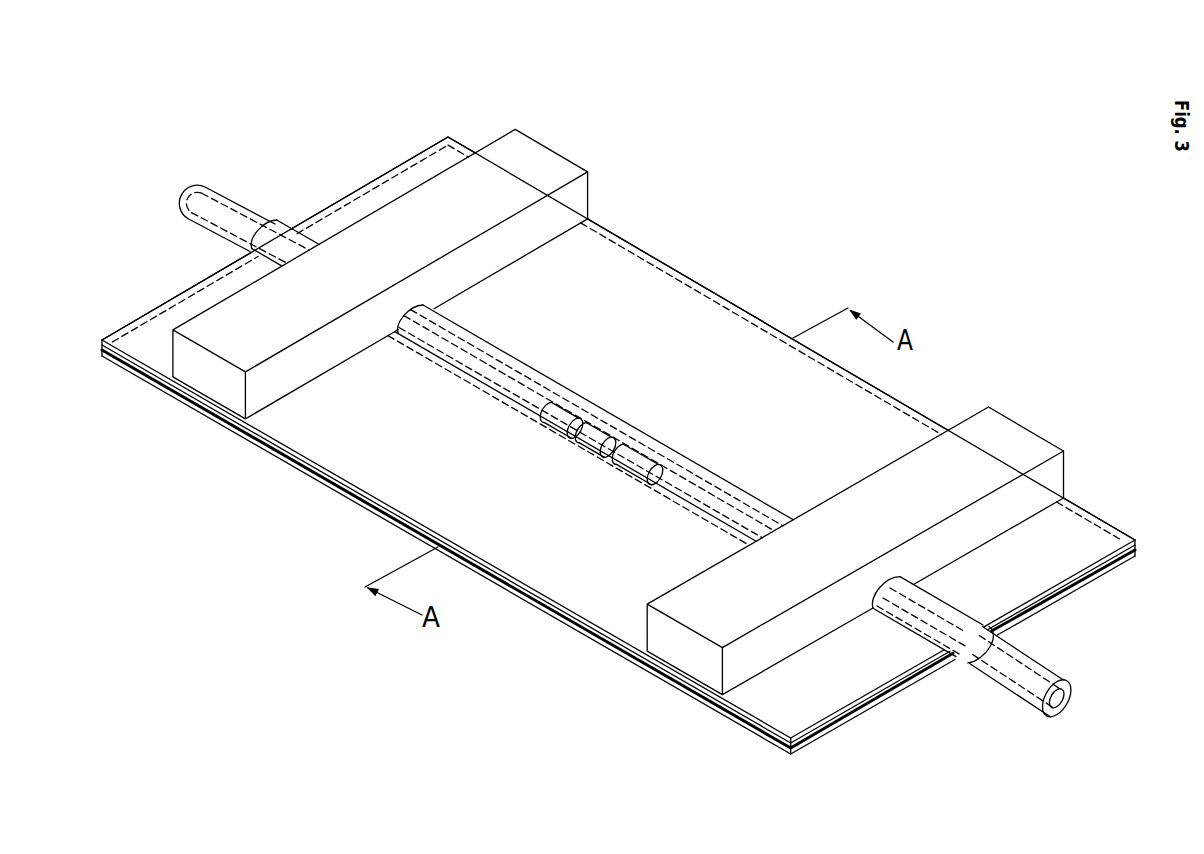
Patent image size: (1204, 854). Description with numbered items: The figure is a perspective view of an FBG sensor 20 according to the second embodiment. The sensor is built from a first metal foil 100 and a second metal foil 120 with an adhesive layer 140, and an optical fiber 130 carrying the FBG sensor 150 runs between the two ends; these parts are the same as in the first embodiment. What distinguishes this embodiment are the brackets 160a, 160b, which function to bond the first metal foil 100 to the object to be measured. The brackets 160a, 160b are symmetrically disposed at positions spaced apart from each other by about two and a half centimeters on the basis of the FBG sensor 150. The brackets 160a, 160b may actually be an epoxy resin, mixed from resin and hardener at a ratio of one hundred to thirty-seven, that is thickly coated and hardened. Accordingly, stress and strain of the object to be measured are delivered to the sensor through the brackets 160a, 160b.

The FBG sensor 20 is at (781, 258).
The first metal foil 100 is at (1065, 547).
The second metal foil 120 is at (700, 698).
The adhesive layer 140 is at (217, 420).
The FBG sensor 150 is at (566, 402).
The bracket 160a is at (545, 156).
The bracket 160b is at (1023, 432).
The optical fiber 130 is at (1020, 698).